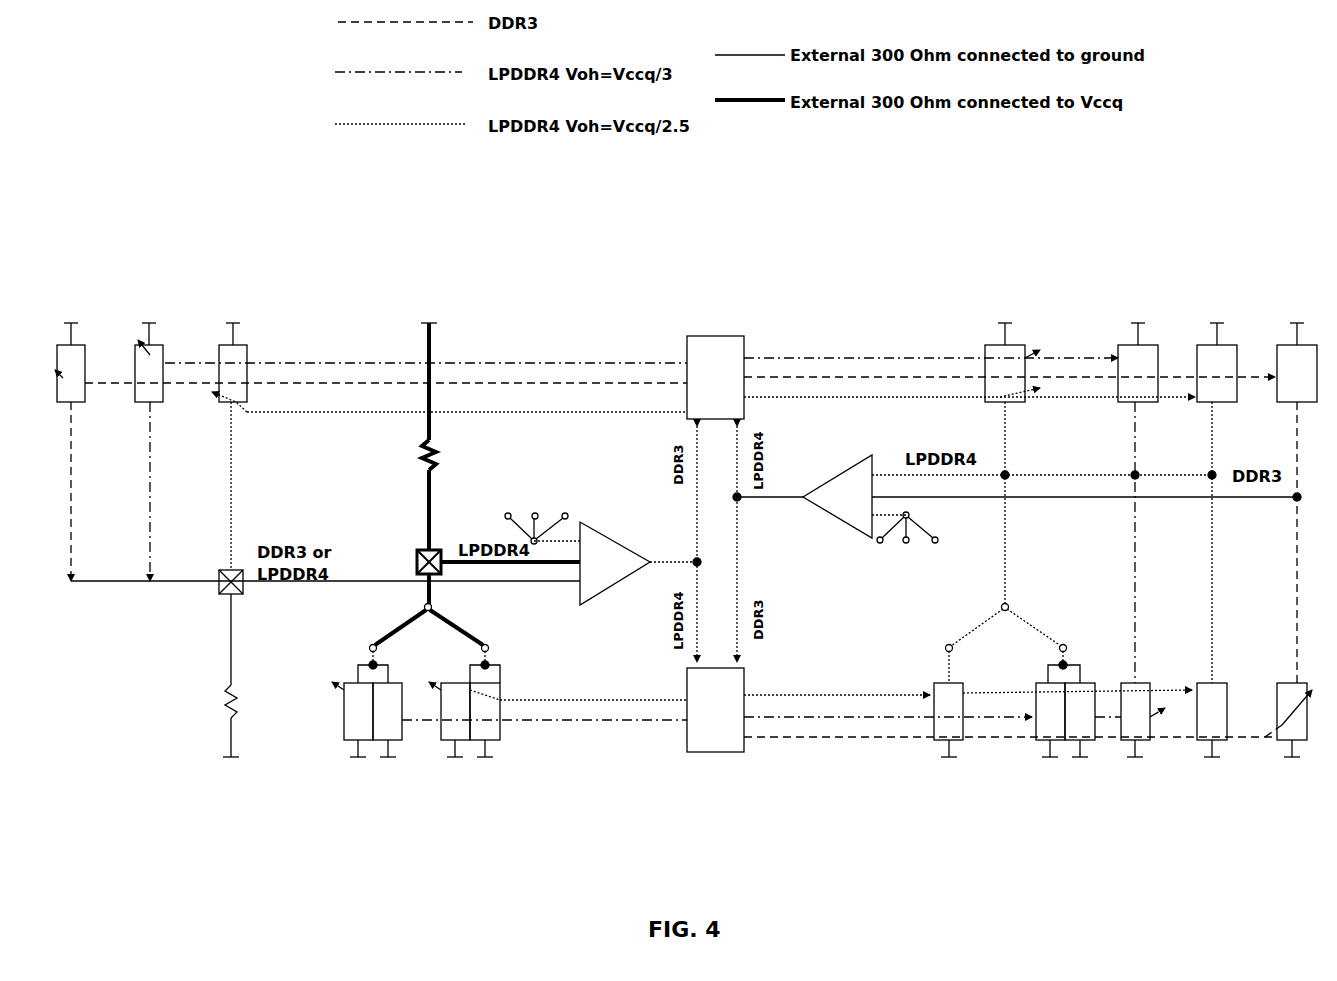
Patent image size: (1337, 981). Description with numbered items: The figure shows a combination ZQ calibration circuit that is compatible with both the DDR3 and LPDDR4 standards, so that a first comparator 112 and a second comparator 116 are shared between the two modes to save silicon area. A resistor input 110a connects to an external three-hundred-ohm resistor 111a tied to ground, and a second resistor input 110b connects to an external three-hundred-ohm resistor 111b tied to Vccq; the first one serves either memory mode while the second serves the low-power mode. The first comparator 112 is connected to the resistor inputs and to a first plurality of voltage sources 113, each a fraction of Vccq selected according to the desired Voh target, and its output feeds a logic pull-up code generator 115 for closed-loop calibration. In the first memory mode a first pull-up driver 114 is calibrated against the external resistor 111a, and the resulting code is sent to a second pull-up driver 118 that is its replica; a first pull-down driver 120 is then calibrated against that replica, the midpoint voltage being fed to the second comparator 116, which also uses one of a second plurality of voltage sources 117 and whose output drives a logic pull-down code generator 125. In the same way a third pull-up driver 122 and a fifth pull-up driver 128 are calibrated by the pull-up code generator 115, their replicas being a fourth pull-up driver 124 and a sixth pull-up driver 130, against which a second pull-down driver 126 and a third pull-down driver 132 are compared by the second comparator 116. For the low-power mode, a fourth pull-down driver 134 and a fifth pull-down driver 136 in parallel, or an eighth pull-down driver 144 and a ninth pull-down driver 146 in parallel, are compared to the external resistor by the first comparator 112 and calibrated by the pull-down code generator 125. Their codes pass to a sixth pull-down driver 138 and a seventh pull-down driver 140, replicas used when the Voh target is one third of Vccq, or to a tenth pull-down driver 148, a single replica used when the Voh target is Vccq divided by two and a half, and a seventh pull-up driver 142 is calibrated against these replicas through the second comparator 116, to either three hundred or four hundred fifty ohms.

The resistor input 110a is at (249, 596).
The resistor input 110b is at (398, 556).
The external resistor 111a is at (221, 683).
The external resistor 111b is at (432, 460).
The first comparator 112 is at (612, 533).
The first plurality of voltage sources 113 is at (543, 427).
The first pull-up driver 114 is at (80, 283).
The logic pull-up code generator 115 is at (723, 328).
The second comparator 116 is at (822, 533).
The second plurality of voltage sources 117 is at (900, 640).
The second pull-up driver 118 is at (1290, 292).
The first pull-down driver 120 is at (1290, 762).
The third pull-up driver 122 is at (157, 283).
The fourth pull-up driver 124 is at (1150, 292).
The logic pull-down code generator 125 is at (713, 768).
The second pull-down driver 126 is at (1136, 762).
The fifth pull-up driver 128 is at (235, 283).
The sixth pull-up driver 130 is at (1223, 292).
The third pull-down driver 132 is at (1213, 762).
The fourth pull-down driver 134 is at (340, 770).
The fifth pull-down driver 136 is at (388, 770).
The sixth pull-down driver 138 is at (1040, 762).
The seventh pull-down driver 140 is at (1087, 762).
The seventh pull-up driver 142 is at (1020, 292).
The eighth pull-down driver 144 is at (450, 770).
The ninth pull-down driver 146 is at (497, 770).
The tenth pull-down driver 148 is at (942, 762).